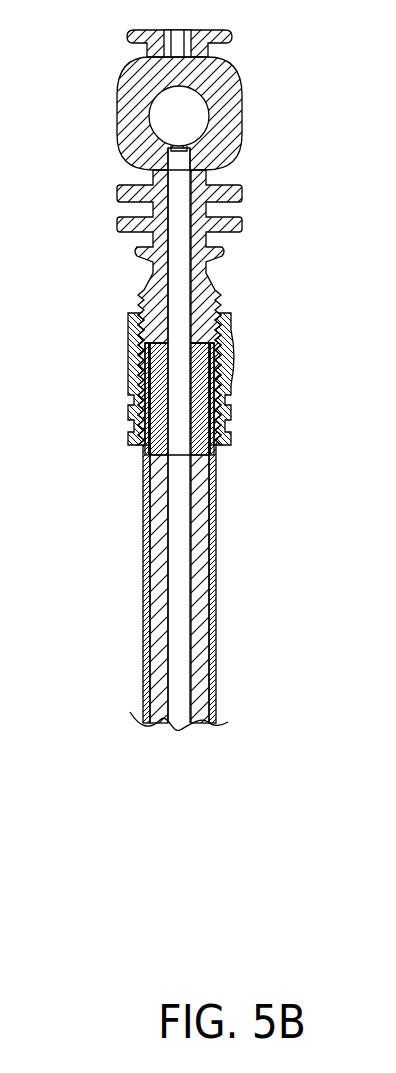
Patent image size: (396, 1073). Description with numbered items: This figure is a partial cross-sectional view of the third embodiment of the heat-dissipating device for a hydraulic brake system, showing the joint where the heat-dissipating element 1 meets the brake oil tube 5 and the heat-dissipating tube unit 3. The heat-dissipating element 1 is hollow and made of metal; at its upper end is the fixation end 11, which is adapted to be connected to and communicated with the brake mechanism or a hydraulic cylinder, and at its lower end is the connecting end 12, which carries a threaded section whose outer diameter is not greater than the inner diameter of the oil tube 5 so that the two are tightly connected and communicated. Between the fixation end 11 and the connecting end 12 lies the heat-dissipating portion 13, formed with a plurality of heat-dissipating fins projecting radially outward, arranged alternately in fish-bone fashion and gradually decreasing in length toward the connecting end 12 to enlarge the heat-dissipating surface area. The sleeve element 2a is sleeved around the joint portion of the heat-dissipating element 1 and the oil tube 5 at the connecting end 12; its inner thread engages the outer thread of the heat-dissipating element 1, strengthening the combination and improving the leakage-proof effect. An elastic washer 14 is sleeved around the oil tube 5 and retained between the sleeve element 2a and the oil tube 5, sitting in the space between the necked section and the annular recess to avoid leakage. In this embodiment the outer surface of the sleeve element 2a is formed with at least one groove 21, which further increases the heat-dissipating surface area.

The heat-dissipating element 1 is at (175, 242).
The fixation end 11 is at (130, 98).
The heat-dissipating portion 13 is at (124, 193).
The connecting end 12 is at (199, 412).
The groove 21 is at (232, 330).
The elastic washer 14 is at (147, 374).
The sleeve element 2a is at (133, 351).
The heat-dissipating tube unit 3 is at (146, 528).
The brake oil tube 5 is at (199, 541).